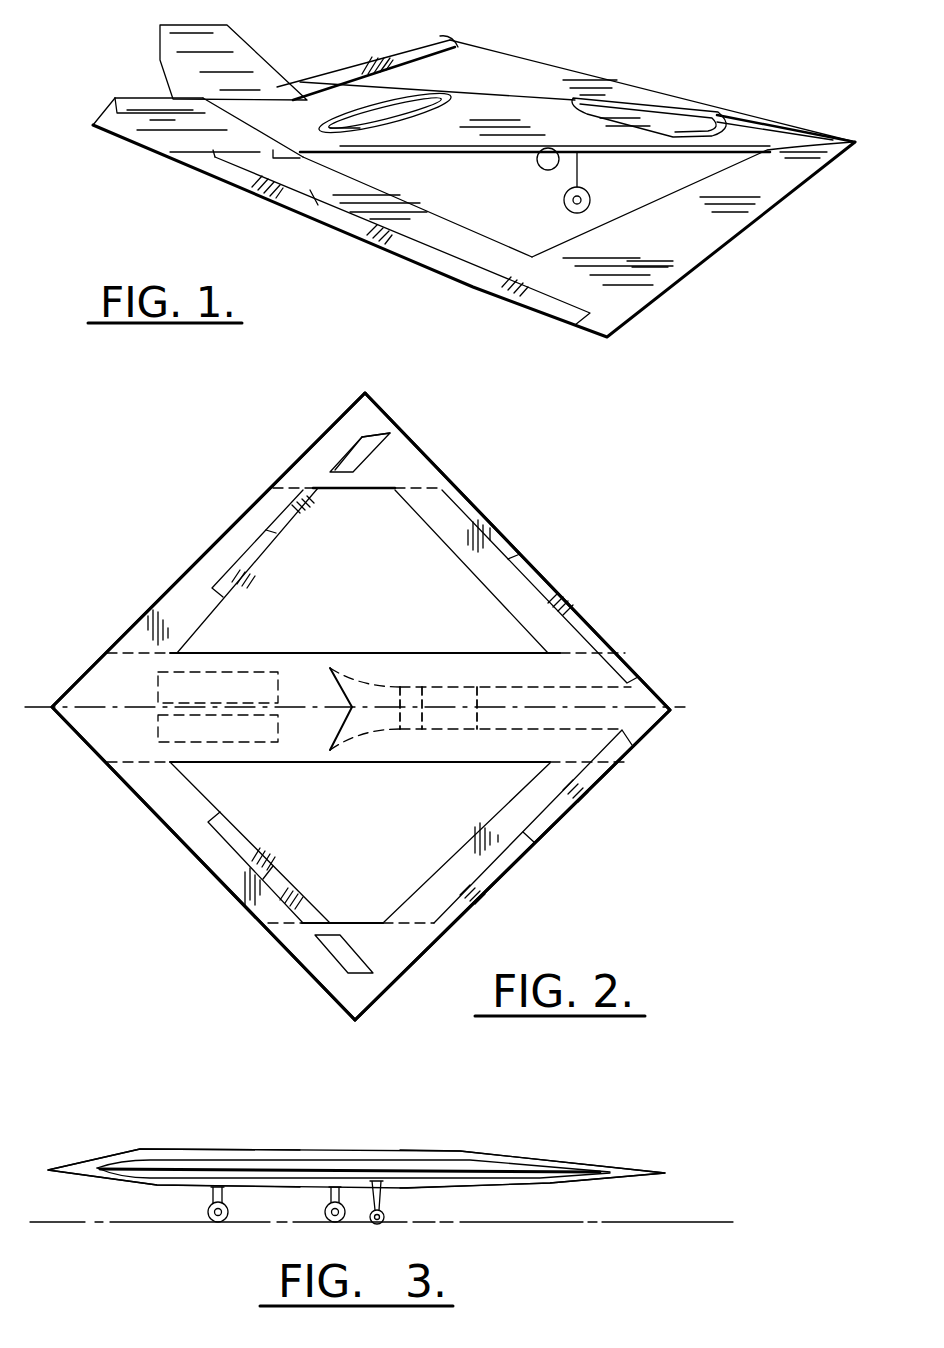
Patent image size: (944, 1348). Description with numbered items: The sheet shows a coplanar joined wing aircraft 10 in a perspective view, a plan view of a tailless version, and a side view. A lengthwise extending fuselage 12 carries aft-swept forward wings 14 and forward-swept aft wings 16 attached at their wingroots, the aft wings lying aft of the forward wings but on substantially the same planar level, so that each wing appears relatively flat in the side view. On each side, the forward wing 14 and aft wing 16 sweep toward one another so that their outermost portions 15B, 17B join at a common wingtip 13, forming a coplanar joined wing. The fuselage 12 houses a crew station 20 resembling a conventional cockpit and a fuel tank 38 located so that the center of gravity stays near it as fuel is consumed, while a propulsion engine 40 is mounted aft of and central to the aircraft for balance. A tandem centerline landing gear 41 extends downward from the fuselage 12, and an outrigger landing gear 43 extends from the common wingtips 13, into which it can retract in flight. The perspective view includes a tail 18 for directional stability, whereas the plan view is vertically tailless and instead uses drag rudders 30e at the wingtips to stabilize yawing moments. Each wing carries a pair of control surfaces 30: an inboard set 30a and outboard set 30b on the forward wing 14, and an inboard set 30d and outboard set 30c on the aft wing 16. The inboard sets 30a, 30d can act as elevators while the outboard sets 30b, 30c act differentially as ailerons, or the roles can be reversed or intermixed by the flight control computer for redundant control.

In FIG. 1, the joined wing aircraft 10 is at (708, 53).
In FIG. 2, the joined wing aircraft 10 is at (558, 473).
In FIG. 3, the joined wing aircraft 10 is at (567, 1145).
In FIG. 1, the fuselage 12 is at (360, 132).
In FIG. 2, the fuselage 12 is at (390, 665).
In FIG. 3, the fuselage 12 is at (193, 1158).
In FIG. 2, the common wingtip 13 is at (372, 392).
In FIG. 1, the forward wing 14 is at (535, 65).
In FIG. 2, the forward wing 14 is at (255, 522).
In FIG. 3, the forward wing 14 is at (168, 1167).
In FIG. 2, the outermost portion of the forward wing 15B is at (338, 468).
In FIG. 1, the aft wing 16 is at (405, 72).
In FIG. 2, the aft wing 16 is at (481, 557).
In FIG. 3, the aft wing 16 is at (552, 1175).
In FIG. 2, the outermost portion of the aft wing 17B is at (387, 450).
In FIG. 1, the tail 18 is at (173, 33).
In FIG. 1, the crew station 20 is at (647, 107).
In FIG. 1, the control surfaces 30 is at (323, 80).
In FIG. 2, the control surfaces 30 is at (647, 690).
In FIG. 2, the inboard set of control surfaces on the forward wing 30a is at (223, 580).
In FIG. 2, the outboard set of control surfaces on the forward wing 30b is at (303, 503).
In FIG. 2, the outboard set of control surfaces on the aft wing 30c is at (540, 862).
In FIG. 2, the inboard set of control surfaces on the aft wing 30d is at (537, 573).
In FIG. 2, the drag rudders 30e is at (345, 462).
In FIG. 2, the fuel tank 38 is at (177, 690).
In FIG. 2, the propulsion engine 40 is at (443, 717).
In FIG. 3, the tandem centerline landing gear 41 is at (212, 1195).
In FIG. 3, the outrigger landing gear 43 is at (383, 1198).